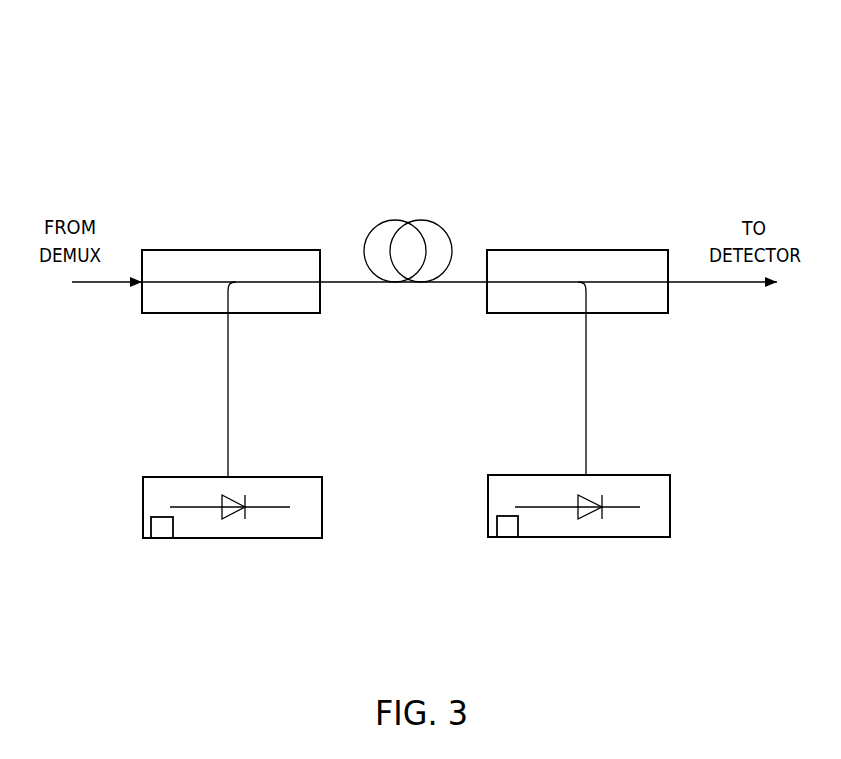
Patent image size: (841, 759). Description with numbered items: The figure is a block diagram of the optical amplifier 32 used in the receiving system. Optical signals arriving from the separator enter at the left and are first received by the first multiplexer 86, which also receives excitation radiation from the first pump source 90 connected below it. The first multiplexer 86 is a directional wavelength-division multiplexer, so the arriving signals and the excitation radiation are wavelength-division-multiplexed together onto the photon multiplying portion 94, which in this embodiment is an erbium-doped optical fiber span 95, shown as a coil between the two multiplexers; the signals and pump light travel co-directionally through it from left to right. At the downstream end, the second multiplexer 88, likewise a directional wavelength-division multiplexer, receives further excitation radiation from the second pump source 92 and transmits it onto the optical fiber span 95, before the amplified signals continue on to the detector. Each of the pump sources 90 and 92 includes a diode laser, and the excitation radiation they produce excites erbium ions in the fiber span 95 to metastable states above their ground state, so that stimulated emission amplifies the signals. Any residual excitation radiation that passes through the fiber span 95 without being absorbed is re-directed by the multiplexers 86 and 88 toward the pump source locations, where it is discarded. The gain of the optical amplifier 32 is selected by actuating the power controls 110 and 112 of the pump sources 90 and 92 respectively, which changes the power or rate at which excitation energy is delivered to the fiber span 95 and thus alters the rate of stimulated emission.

The optical amplifier 32 is at (528, 66).
The first multiplexer 86 is at (228, 250).
The second multiplexer 88 is at (586, 250).
The first pump source 90 is at (282, 477).
The second pump source 92 is at (647, 475).
The photon multiplying portion 94 is at (418, 187).
The erbium-doped optical fiber span 95 is at (427, 218).
The power control 110 is at (162, 539).
The power control 112 is at (508, 538).